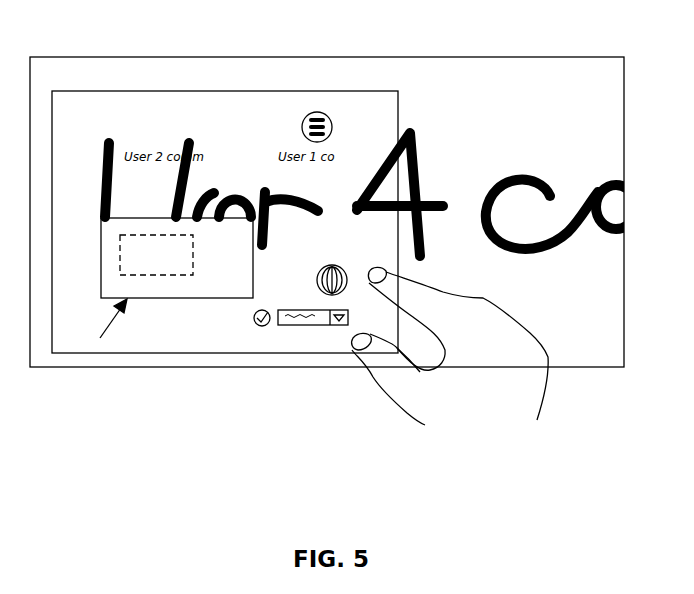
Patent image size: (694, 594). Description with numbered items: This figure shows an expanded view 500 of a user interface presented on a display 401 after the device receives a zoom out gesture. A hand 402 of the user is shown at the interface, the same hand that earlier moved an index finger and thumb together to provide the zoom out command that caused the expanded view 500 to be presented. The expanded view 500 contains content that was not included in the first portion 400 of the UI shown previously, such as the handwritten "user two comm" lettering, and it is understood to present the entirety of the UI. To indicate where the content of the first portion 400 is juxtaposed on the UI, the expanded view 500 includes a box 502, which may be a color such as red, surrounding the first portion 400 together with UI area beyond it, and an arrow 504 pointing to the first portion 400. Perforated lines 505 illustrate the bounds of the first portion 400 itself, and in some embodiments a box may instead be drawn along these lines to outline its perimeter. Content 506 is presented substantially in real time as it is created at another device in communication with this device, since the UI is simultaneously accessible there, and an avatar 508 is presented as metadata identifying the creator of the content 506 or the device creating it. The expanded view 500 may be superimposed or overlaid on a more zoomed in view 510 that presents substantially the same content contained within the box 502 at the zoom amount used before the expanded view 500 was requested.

The display 401 is at (608, 46).
The expanded view 500 is at (107, 92).
The first portion 400 is at (170, 234).
The perforated lines 505 is at (121, 249).
The arrow 504 is at (100, 338).
The box 502 is at (175, 299).
The avatar 508 is at (343, 263).
The content 506 is at (312, 326).
The zoomed in view 510 is at (612, 360).
The hand 402 is at (531, 413).